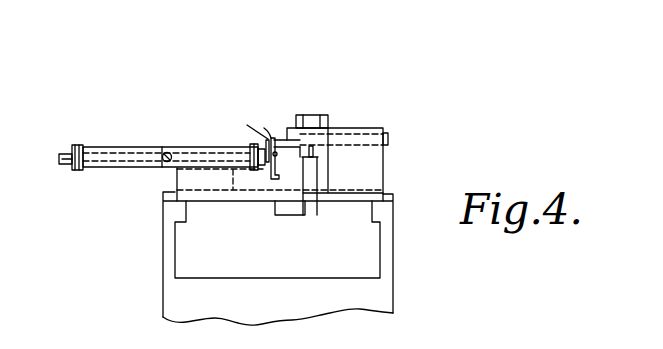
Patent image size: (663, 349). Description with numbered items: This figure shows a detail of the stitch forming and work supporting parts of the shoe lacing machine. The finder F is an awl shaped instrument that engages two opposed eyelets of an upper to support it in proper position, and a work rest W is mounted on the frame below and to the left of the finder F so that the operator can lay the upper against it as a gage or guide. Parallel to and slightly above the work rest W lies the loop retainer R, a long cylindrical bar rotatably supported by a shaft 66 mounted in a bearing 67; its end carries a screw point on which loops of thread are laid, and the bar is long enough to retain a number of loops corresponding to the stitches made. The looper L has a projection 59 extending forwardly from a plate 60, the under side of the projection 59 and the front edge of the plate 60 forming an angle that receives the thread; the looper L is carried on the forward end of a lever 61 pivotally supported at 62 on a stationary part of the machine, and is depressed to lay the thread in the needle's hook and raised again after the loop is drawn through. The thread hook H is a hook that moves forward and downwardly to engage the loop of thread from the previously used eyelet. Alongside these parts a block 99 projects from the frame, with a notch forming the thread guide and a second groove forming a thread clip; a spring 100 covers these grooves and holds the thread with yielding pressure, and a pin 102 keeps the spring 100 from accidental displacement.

The bearing 67 is at (102, 151).
The shaft 66 is at (62, 162).
The work rest W is at (184, 178).
The loop retainer R is at (213, 155).
The projection 59 is at (247, 125).
The looper L is at (259, 123).
The thread hook H is at (270, 143).
The finder F is at (287, 141).
The lever 61 is at (300, 120).
The pivot 62 is at (358, 127).
The pin 102 is at (385, 144).
The spring 100 is at (316, 151).
The plate 60 is at (268, 178).
The block 99 is at (312, 193).